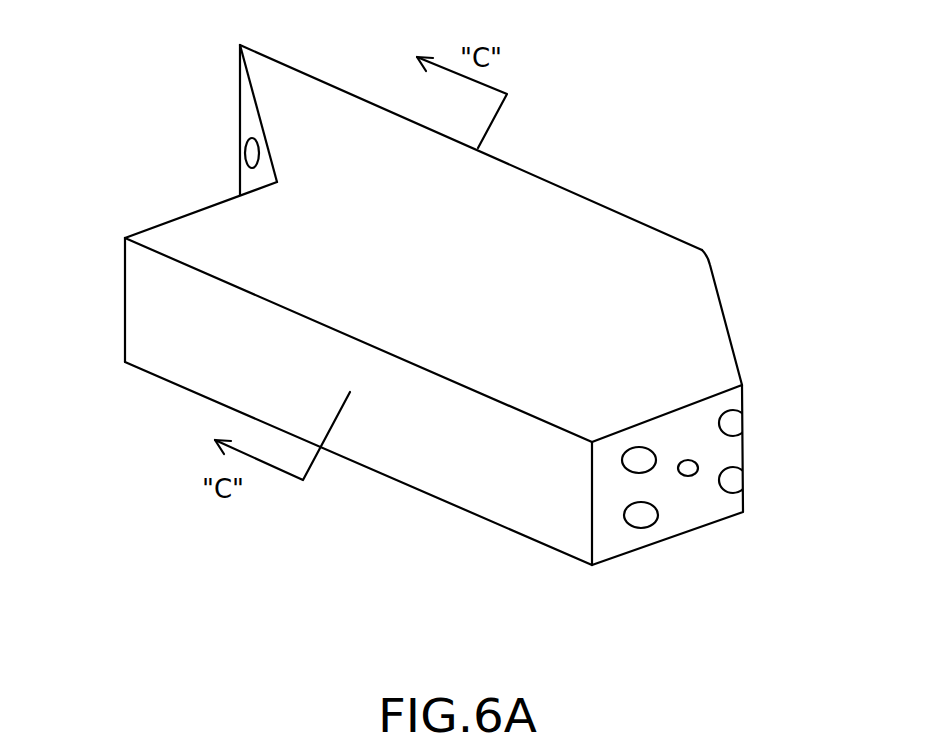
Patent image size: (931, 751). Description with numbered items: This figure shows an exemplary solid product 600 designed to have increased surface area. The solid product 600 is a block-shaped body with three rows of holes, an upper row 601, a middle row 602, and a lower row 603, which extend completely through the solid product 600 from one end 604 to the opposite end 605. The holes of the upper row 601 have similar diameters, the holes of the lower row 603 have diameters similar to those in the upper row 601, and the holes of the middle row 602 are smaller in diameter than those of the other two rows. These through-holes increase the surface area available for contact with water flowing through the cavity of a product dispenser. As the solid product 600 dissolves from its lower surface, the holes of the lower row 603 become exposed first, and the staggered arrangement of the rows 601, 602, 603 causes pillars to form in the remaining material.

The solid product 600 is at (652, 195).
The upper row of holes 601 is at (622, 462).
The middle row of holes 602 is at (678, 472).
The lower row of holes 603 is at (628, 525).
The end 604 is at (727, 325).
The opposite end 605 is at (172, 218).